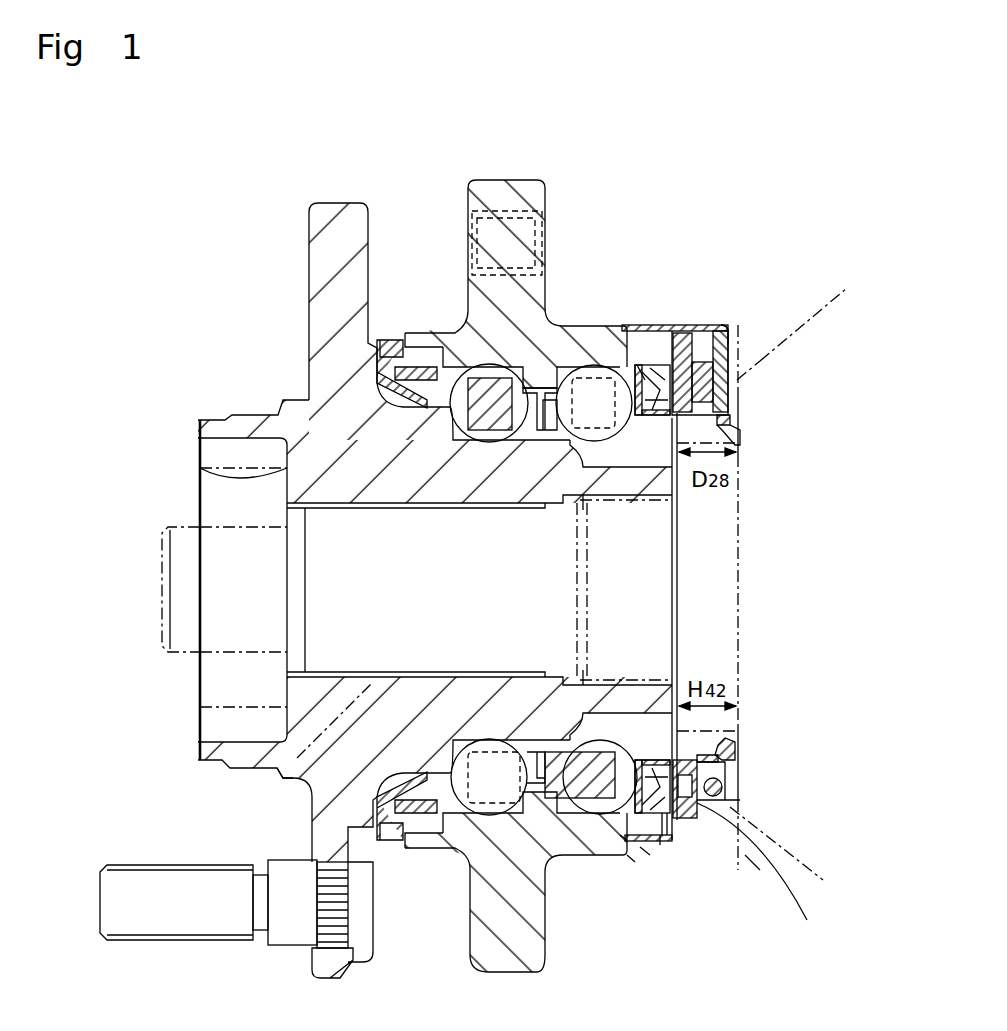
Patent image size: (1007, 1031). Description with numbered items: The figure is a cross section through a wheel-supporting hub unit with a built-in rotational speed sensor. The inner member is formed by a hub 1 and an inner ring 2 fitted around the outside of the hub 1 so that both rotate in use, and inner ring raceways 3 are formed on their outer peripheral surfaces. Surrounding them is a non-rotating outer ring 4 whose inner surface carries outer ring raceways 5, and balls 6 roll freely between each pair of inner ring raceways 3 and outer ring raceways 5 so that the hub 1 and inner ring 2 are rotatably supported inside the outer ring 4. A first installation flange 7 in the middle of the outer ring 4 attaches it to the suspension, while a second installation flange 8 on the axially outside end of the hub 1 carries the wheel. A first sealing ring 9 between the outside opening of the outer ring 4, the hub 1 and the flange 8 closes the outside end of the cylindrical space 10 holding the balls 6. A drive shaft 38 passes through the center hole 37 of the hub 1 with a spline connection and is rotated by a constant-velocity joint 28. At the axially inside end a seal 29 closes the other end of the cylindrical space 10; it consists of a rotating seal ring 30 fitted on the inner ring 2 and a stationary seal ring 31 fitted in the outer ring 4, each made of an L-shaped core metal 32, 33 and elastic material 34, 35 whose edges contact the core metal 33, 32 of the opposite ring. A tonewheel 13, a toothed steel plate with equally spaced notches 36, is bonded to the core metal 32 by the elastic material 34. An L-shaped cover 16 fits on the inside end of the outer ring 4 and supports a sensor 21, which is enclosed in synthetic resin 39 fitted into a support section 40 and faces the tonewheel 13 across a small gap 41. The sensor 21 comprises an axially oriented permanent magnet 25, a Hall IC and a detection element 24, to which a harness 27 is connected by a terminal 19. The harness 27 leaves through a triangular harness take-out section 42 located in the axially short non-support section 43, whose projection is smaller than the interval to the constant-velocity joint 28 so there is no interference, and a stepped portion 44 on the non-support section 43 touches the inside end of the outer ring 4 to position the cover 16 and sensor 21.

The hub 1 is at (198, 470).
The inner ring 2 is at (677, 482).
The inner ring raceways 3 is at (476, 430).
The outer ring 4 is at (565, 340).
The outer ring raceways 5 is at (587, 790).
The balls 6 is at (448, 360).
The first installation flange 7 is at (470, 210).
The second installation flange 8 is at (313, 280).
The first sealing ring 9 is at (392, 382).
The cylindrical space 10 is at (532, 445).
The tonewheel 13 is at (735, 745).
The cover 16 is at (630, 860).
The terminal 19 is at (690, 818).
The sensor 21 is at (737, 385).
The detection element 24 is at (733, 408).
The permanent magnet 25 is at (718, 325).
The harness 27 is at (725, 795).
The constant-velocity joint 28 is at (800, 327).
The seal 29 is at (660, 845).
The seal ring on the rotating side 30 is at (637, 365).
The seal ring on the stationary side 31 is at (625, 838).
The core metal 32 is at (673, 690).
The core metal 33 is at (645, 850).
The elastic material 34 is at (663, 825).
The elastic material 35 is at (650, 462).
The notches 36 is at (655, 365).
The center hole 37 is at (375, 505).
The drive shaft 38 is at (285, 773).
The synthetic resin 39 is at (692, 327).
The support section 40 is at (730, 335).
The small gap 41 is at (735, 440).
The harness take-out section 42 is at (725, 778).
The non-support section 43 is at (745, 860).
The stepped portion 44 is at (668, 835).